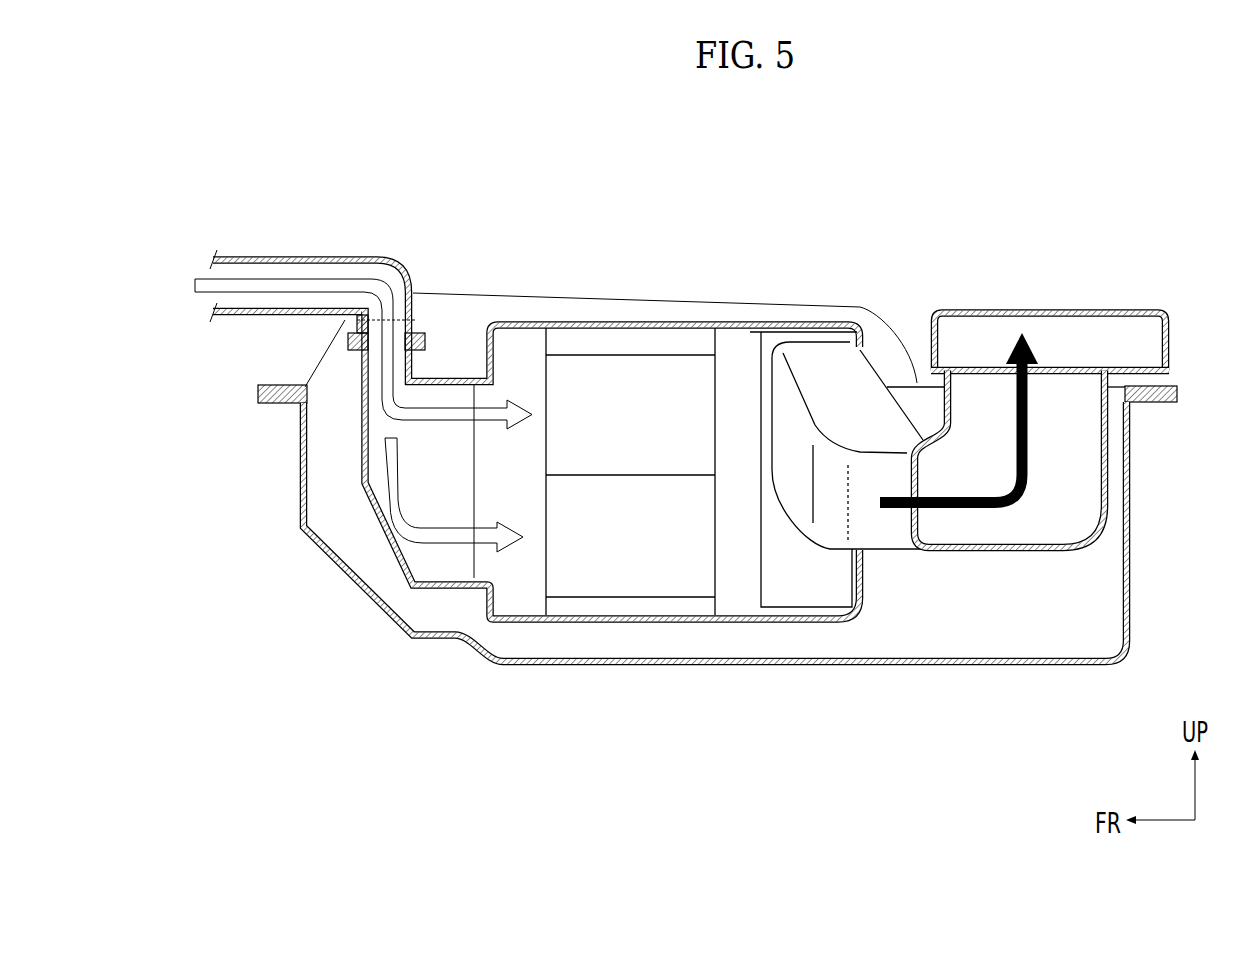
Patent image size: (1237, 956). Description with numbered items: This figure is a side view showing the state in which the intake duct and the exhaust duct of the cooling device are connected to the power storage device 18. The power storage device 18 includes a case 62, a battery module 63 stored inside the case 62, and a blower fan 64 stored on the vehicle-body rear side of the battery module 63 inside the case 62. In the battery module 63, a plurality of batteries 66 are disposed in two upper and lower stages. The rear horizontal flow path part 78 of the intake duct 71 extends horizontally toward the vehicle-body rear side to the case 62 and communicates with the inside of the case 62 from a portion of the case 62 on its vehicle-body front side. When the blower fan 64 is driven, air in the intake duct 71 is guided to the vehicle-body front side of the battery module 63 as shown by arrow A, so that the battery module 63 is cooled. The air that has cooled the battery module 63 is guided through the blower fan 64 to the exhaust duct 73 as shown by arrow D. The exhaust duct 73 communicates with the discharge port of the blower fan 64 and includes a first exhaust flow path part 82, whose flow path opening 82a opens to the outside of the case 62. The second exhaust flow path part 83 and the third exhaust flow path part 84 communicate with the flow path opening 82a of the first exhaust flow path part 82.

The intake duct 71 is at (255, 247).
The arrow A is at (309, 278).
The rear horizontal flow path part 78 is at (374, 270).
The power storage device 18 is at (644, 312).
The battery module 63 is at (585, 343).
The battery 66 is at (688, 367).
The blower fan 64 is at (818, 583).
The case 62 is at (1005, 666).
The second exhaust flow path part 83 is at (1146, 330).
The exhaust duct 73 is at (993, 298).
The third exhaust flow path part 84 is at (1045, 332).
The flow path opening 82a is at (1061, 390).
The first exhaust flow path part 82 is at (1047, 518).
The arrow D is at (958, 514).